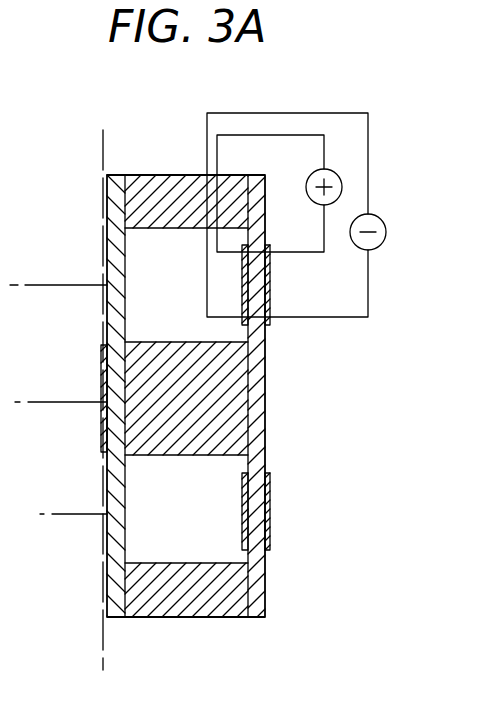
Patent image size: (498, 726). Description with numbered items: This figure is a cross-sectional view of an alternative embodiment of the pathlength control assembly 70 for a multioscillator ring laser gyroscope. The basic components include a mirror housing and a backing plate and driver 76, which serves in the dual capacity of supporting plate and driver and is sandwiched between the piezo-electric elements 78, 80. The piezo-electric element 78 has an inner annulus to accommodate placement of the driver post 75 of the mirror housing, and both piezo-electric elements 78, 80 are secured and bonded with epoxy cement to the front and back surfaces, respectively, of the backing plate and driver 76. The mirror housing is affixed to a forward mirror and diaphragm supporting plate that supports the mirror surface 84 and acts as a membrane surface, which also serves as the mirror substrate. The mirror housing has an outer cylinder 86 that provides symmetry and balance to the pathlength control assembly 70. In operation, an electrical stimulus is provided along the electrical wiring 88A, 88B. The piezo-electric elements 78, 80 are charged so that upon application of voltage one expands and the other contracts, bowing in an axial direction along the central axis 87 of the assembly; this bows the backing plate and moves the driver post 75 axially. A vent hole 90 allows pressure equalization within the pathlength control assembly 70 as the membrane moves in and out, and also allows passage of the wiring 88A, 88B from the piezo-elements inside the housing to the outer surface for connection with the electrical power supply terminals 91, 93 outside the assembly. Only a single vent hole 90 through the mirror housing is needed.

The pathlength control assembly 70 is at (124, 160).
The driver post 75 is at (207, 443).
The backing plate and driver 76 is at (267, 586).
The piezo-electric element 78 is at (242, 537).
The piezo-electric element 80 is at (272, 535).
The mirror surface 84 is at (103, 432).
The outer cylinder 86 is at (178, 597).
The central axis 87 is at (80, 402).
The electrical wiring 88A is at (290, 135).
The electrical wiring 88B is at (242, 113).
The vent hole 90 is at (205, 173).
The electrical power supply terminal 91 is at (313, 173).
The electrical power supply terminal 93 is at (381, 219).